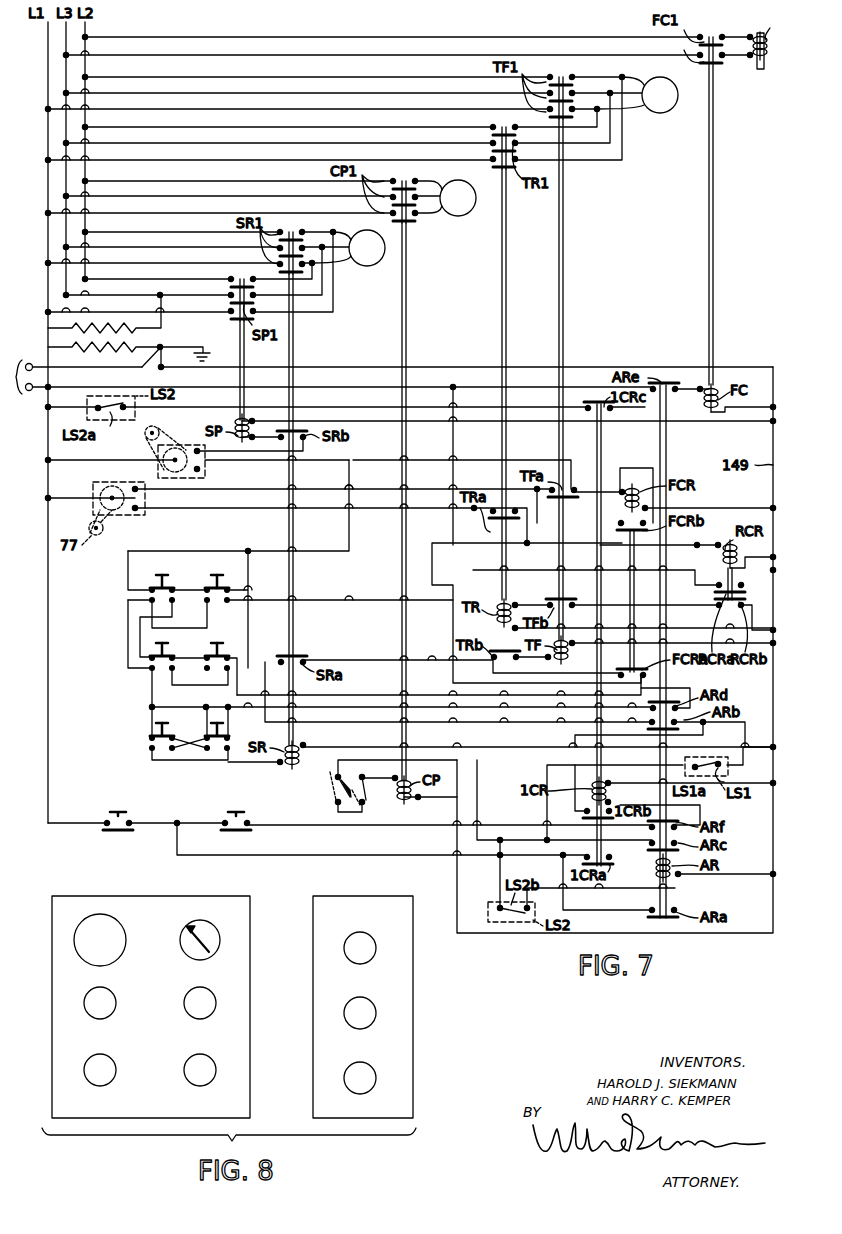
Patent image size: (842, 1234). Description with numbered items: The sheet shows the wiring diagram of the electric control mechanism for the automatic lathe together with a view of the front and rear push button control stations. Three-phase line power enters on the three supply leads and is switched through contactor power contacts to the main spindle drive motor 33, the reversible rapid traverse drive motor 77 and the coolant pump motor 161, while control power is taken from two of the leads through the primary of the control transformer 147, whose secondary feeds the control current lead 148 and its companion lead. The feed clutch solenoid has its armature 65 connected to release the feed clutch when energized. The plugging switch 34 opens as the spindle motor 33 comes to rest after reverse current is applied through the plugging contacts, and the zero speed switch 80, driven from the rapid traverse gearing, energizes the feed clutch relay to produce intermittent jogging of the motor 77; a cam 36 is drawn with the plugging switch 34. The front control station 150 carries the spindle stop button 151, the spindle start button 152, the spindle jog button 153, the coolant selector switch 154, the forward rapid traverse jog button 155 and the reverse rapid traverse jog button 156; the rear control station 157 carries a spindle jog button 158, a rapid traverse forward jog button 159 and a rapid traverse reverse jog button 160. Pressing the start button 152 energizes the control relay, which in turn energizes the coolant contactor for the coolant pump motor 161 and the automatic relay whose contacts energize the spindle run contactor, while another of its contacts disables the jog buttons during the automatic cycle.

In FIG. 7, the main spindle drive motor 33 is at (368, 266).
In FIG. 7, the zero speed or plugging switch 34 is at (205, 469).
In FIG. 7, the cam 36 is at (160, 426).
In FIG. 7, the armature 65 is at (762, 70).
In FIG. 7, the rapid traverse drive motor 77 is at (660, 113).
In FIG. 7, the zero speed switch 80 is at (94, 482).
In FIG. 7, the control transformer 147 is at (156, 342).
In FIG. 7, the control current lead 148 is at (48, 683).
In FIG. 8, the front control station 150 is at (246, 1010).
In FIG. 7, the spindle stop button 151 is at (118, 812).
In FIG. 8, the spindle stop button 151 is at (120, 928).
In FIG. 7, the spindle start button 152 is at (236, 810).
In FIG. 8, the spindle start button 152 is at (112, 992).
In FIG. 7, the spindle jog button 153 is at (155, 726).
In FIG. 8, the spindle jog button 153 is at (112, 1059).
In FIG. 7, the coolant selector switch 154 is at (365, 806).
In FIG. 8, the coolant selector switch 154 is at (200, 960).
In FIG. 7, the forward rapid traverse jog button 155 is at (164, 554).
In FIG. 8, the forward rapid traverse jog button 155 is at (200, 1019).
In FIG. 7, the reverse rapid traverse jog button 156 is at (152, 642).
In FIG. 8, the reverse rapid traverse jog button 156 is at (200, 1086).
In FIG. 8, the rear control station 157 is at (312, 1004).
In FIG. 7, the spindle jog button 158 is at (222, 720).
In FIG. 8, the spindle jog button 158 is at (360, 964).
In FIG. 7, the rapid traverse forward jog button 159 is at (215, 556).
In FIG. 8, the rapid traverse forward jog button 159 is at (360, 1029).
In FIG. 7, the rapid traverse reverse jog button 160 is at (215, 640).
In FIG. 8, the rapid traverse reverse jog button 160 is at (360, 1094).
In FIG. 7, the coolant pump motor 161 is at (460, 216).